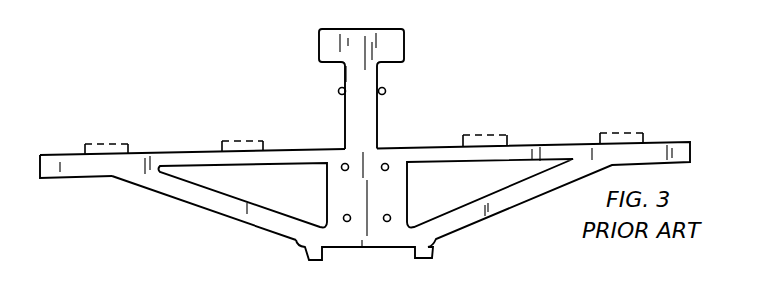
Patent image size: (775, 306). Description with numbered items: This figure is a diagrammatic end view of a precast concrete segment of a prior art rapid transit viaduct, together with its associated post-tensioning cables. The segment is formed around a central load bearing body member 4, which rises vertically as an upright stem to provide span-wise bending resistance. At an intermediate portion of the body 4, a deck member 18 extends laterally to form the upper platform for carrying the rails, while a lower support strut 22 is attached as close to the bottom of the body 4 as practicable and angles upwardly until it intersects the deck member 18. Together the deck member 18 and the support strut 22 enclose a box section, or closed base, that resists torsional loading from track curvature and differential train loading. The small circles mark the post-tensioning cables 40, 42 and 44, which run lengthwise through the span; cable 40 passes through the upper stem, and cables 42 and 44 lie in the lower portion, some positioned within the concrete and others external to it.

The central load bearing body member 4 is at (319, 45).
The deck member 18 is at (176, 153).
The lower support strut 22 is at (215, 210).
The post-tensioning cable 40 is at (386, 91).
The post-tensioning cable 42 is at (343, 216).
The post-tensioning cable 44 is at (391, 216).